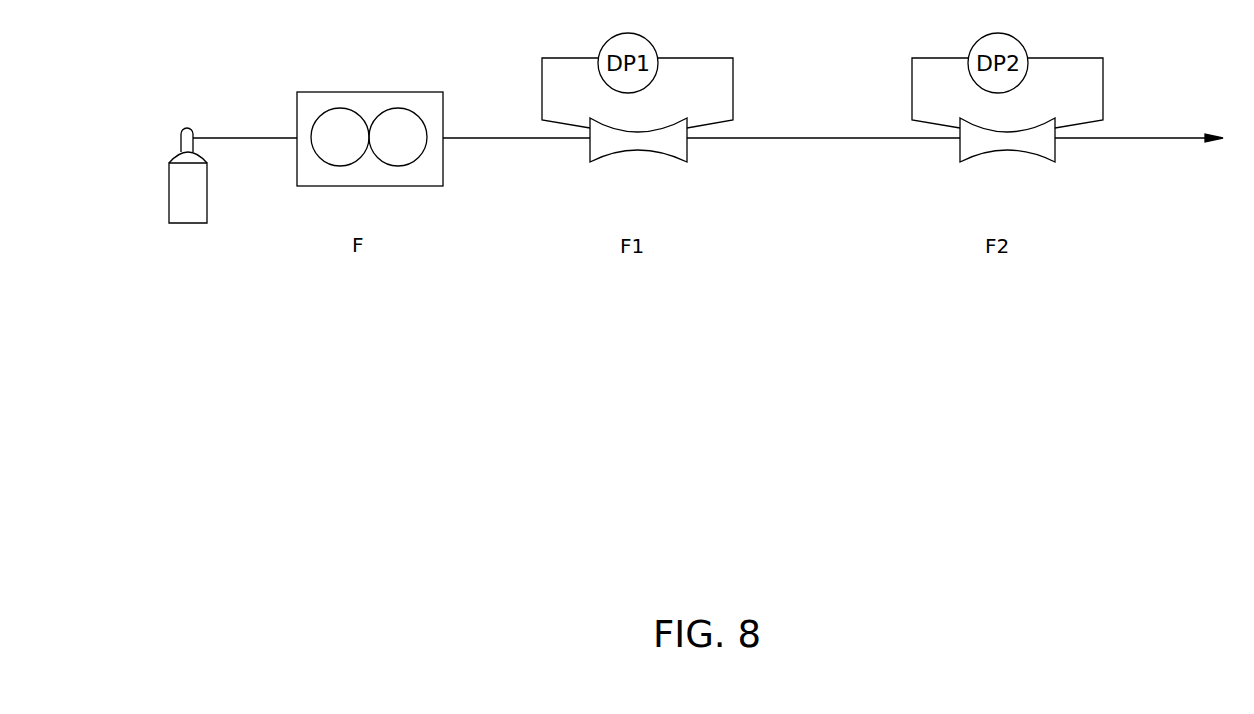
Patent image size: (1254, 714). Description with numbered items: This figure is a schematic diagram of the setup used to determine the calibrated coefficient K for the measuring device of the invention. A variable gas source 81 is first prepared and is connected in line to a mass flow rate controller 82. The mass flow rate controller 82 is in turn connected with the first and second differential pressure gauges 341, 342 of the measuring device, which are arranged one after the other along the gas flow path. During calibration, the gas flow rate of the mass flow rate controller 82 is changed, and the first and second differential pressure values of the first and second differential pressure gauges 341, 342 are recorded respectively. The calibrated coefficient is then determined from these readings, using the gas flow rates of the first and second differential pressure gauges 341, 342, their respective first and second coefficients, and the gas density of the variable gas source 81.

The variable gas source 81 is at (169, 192).
The mass flow rate controller 82 is at (368, 92).
The first differential pressure gauge 341 is at (628, 151).
The second differential pressure gauge 342 is at (1008, 151).